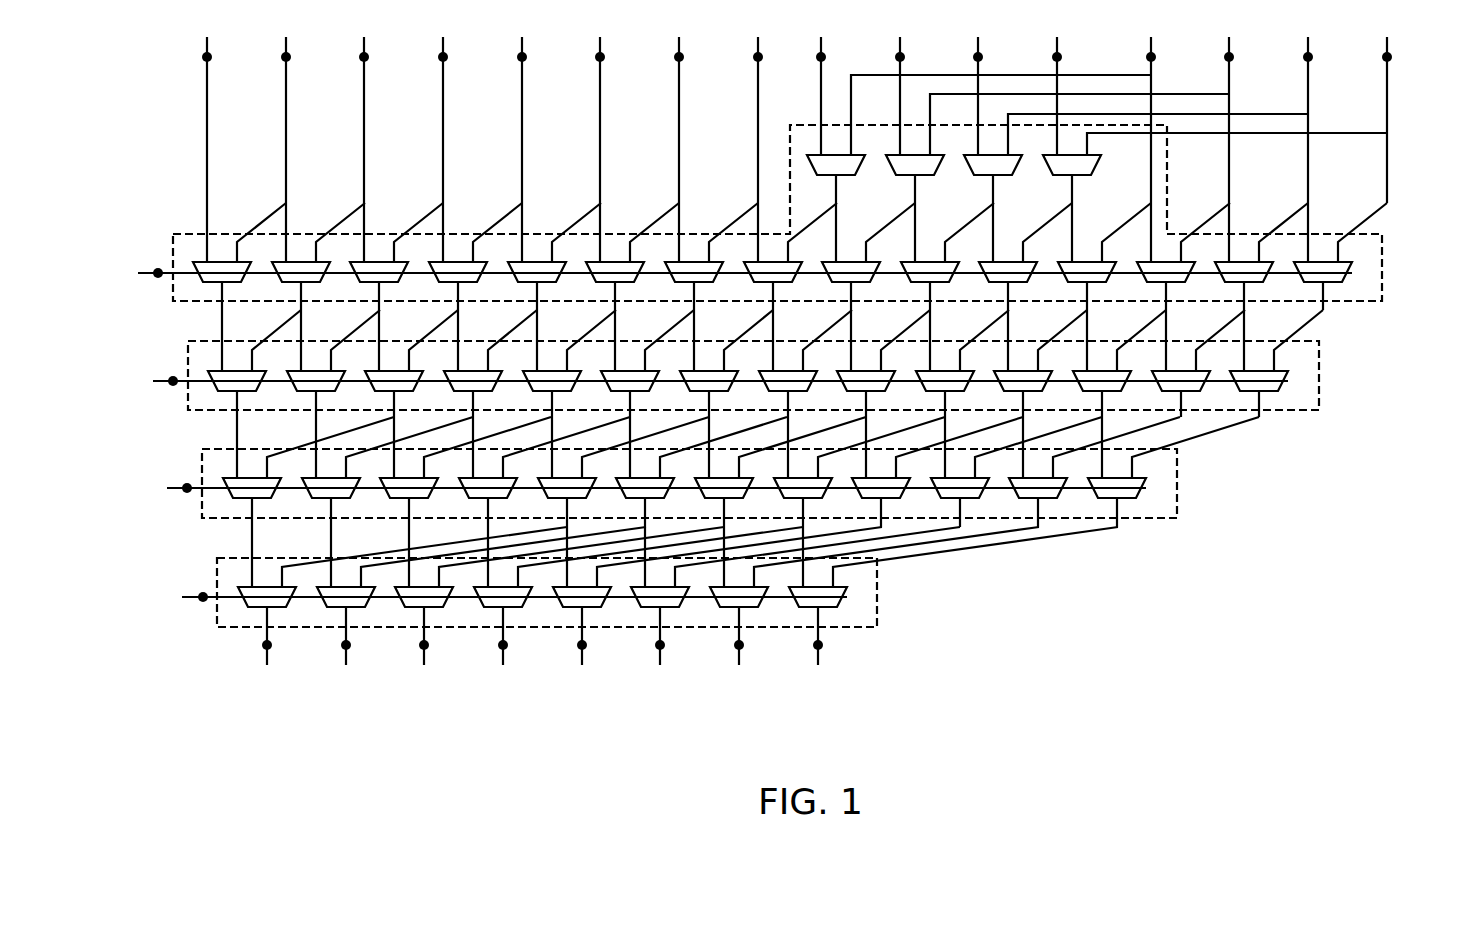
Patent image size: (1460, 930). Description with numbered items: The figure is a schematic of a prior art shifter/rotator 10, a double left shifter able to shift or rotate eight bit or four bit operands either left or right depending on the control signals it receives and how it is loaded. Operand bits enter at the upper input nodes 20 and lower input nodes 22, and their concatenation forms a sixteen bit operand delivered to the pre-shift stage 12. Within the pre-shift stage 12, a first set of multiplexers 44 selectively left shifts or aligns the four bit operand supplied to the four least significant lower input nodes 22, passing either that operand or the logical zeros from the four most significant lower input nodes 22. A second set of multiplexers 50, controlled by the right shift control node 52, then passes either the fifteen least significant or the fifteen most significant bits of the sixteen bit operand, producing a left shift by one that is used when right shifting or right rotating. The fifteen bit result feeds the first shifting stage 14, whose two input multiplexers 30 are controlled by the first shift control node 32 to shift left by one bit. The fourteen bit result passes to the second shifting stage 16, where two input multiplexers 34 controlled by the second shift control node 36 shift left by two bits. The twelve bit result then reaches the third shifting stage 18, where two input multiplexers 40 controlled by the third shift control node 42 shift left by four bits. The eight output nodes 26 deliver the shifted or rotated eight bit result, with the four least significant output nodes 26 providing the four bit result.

The shifter/rotator 10 is at (1258, 617).
The pre-shift stage 12 is at (1384, 268).
The first shifting stage 14 is at (1321, 378).
The second shifting stage 16 is at (1178, 487).
The third shifting stage 18 is at (878, 595).
The upper input nodes 20 is at (214, 51).
The lower input nodes 22 is at (828, 51).
The output nodes 26 is at (273, 648).
The two input multiplexers 30 is at (257, 391).
The first shift control node 32 is at (168, 385).
The two input multiplexers 34 is at (272, 498).
The second shift control node 36 is at (181, 492).
The two input multiplexers 40 is at (287, 607).
The third shift control node 42 is at (197, 600).
The first set of multiplexers 44 is at (858, 163).
The second set of multiplexers 50 is at (242, 281).
The right shift control node 52 is at (153, 278).